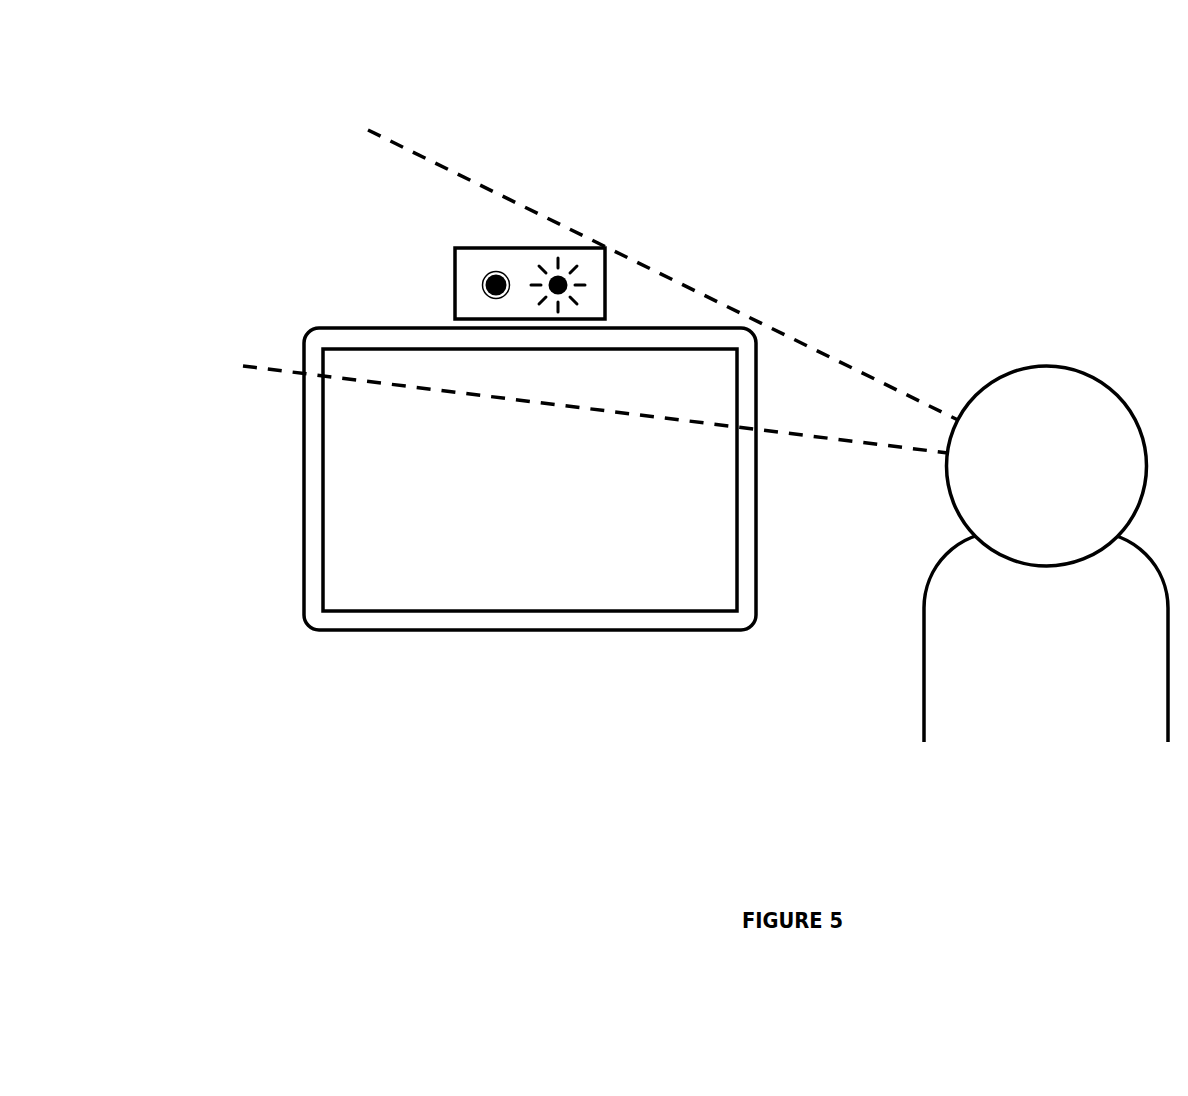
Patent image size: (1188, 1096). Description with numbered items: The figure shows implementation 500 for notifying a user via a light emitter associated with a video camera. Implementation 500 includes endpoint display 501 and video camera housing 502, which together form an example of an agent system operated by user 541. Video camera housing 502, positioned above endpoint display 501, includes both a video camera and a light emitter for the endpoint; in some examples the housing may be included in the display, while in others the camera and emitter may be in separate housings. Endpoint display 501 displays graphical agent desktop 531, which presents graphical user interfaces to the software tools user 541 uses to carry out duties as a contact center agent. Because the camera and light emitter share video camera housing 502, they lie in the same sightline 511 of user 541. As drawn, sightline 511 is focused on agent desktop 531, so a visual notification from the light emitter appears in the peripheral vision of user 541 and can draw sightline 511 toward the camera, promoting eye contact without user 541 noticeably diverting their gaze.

The implementation 500 is at (209, 76).
The endpoint display 501 is at (350, 327).
The video camera housing 502 is at (463, 247).
The sightline 511 is at (912, 430).
The graphical agent desktop 531 is at (547, 506).
The user 541 is at (1063, 682).